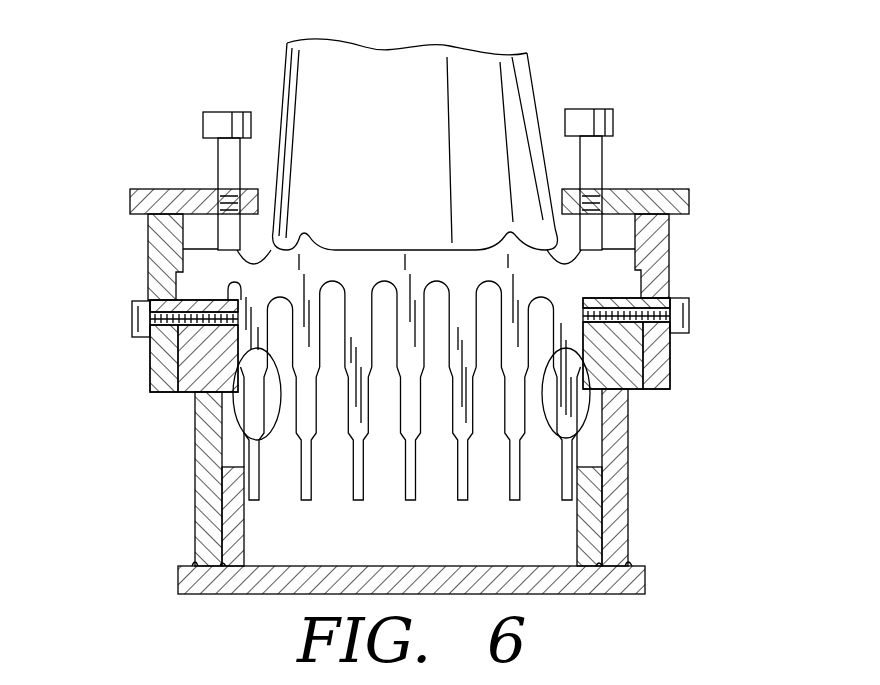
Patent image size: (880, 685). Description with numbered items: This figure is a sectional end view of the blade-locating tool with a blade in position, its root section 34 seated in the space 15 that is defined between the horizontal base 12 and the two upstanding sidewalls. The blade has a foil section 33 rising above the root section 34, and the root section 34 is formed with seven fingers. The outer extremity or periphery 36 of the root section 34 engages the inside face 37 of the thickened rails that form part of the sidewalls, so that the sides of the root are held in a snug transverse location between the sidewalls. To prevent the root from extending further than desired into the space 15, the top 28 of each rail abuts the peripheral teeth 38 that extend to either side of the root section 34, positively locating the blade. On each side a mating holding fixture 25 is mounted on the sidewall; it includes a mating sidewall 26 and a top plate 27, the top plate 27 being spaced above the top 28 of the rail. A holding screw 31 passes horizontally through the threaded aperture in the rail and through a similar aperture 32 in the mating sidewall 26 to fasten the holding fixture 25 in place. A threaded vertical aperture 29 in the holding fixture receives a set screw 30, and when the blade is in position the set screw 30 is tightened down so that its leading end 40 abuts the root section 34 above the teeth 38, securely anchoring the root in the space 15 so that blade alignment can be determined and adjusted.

The base 12 is at (213, 594).
The space 15 is at (465, 542).
The holding fixture 25 is at (147, 182).
The mating sidewall 26 is at (148, 240).
The top plate 27 is at (130, 197).
The top of the rail 28 is at (160, 268).
The vertical aperture 29 is at (212, 207).
The set screw 30 is at (227, 110).
The holding screw 31 is at (133, 312).
The aperture 32 is at (150, 358).
The foil section 33 is at (410, 113).
The root section 34 is at (503, 330).
The outer extremity or periphery 36 is at (243, 436).
The inside face 37 is at (197, 410).
The peripheral teeth 38 is at (668, 231).
The leading end 40 is at (288, 238).